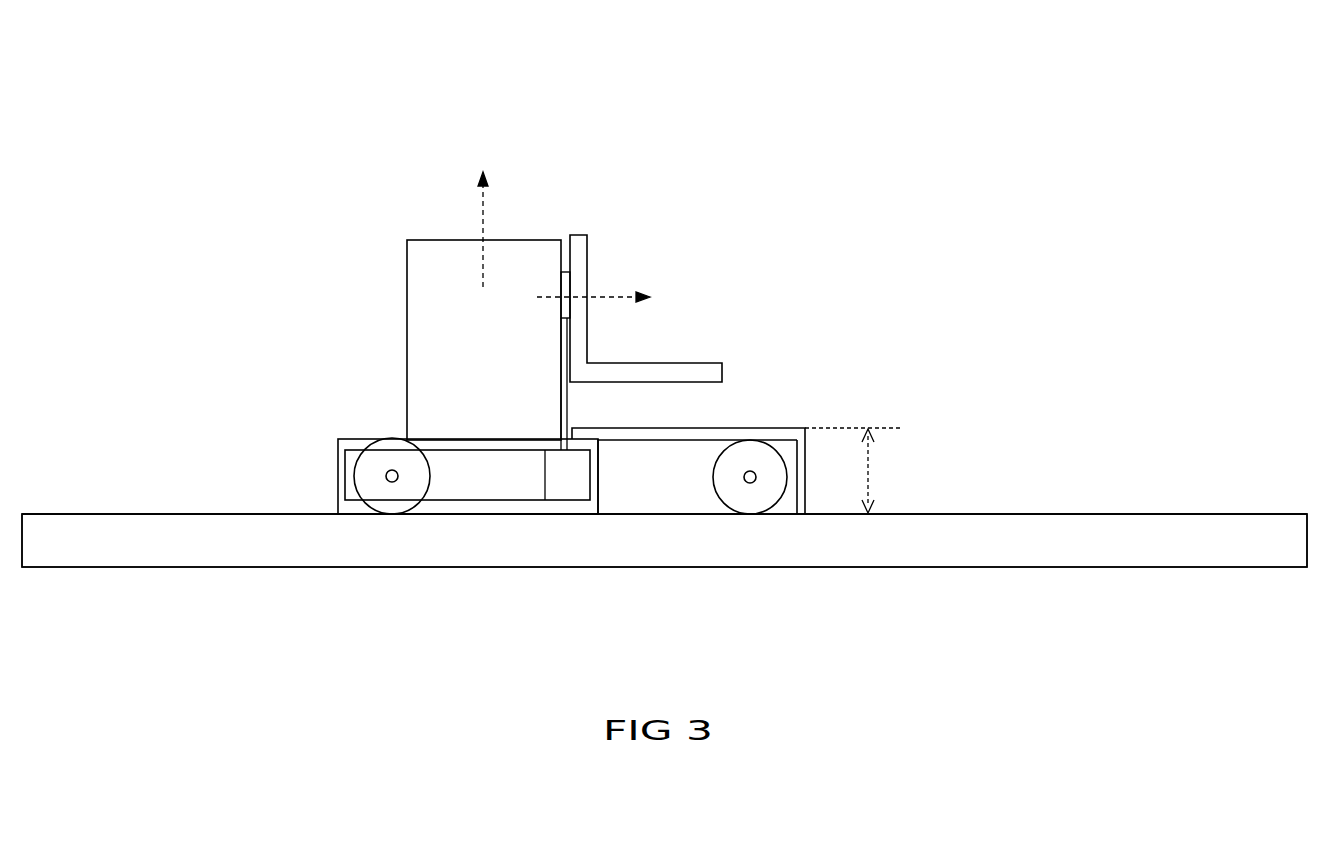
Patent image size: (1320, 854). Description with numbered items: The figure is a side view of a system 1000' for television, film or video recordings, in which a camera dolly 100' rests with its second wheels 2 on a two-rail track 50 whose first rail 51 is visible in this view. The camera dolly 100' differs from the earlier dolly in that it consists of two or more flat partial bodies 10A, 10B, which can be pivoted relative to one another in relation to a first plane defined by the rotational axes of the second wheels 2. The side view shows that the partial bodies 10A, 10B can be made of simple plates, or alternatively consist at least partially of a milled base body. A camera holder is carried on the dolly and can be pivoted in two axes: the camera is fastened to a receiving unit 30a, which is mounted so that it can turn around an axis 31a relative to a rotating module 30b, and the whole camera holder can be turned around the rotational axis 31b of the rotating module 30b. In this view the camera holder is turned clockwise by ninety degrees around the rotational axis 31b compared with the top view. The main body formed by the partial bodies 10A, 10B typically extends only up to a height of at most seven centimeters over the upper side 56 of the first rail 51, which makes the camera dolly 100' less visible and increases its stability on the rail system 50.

The system for television, film or video recordings 1000' is at (621, 53).
The camera dolly 100' is at (611, 366).
The partial body 10A is at (764, 381).
The partial body 10B is at (367, 406).
The second wheels 2 is at (393, 490).
The receiving unit 30a is at (663, 372).
The rotating module 30b is at (488, 340).
The axis 31a is at (622, 294).
The rotational axis 31b is at (480, 204).
The two-rail track 50 is at (1018, 537).
The first rail 51 is at (664, 540).
The upper side 56 is at (1121, 512).